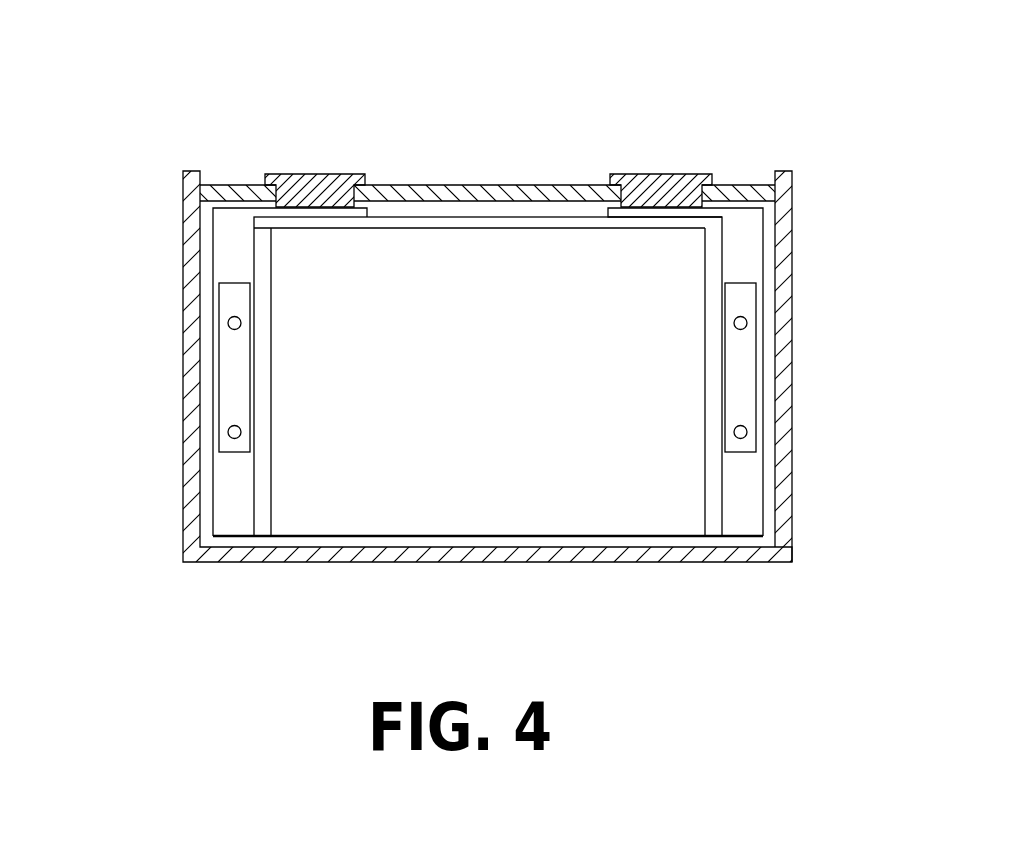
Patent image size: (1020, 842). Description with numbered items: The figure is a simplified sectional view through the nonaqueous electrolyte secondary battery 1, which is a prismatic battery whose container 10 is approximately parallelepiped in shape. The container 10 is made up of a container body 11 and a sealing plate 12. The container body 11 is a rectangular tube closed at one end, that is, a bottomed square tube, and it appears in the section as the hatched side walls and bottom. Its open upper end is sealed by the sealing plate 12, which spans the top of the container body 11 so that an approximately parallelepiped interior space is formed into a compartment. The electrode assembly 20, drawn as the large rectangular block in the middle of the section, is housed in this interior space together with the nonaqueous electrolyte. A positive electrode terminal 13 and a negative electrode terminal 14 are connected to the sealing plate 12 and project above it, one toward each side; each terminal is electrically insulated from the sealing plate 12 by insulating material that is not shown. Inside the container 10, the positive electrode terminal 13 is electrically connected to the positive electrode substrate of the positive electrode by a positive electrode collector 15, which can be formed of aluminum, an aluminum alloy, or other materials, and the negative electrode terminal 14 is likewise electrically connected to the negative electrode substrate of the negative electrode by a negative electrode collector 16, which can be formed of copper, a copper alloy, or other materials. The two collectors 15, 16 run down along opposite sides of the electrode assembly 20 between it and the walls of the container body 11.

The nonaqueous electrolyte secondary battery 1 is at (578, 104).
The container 10 is at (797, 392).
The container body 11 is at (793, 310).
The sealing plate 12 is at (493, 185).
The positive electrode terminal 13 is at (317, 174).
The negative electrode terminal 14 is at (667, 174).
The positive electrode collector 15 is at (228, 249).
The negative electrode collector 16 is at (748, 252).
The electrode assembly 20 is at (422, 227).